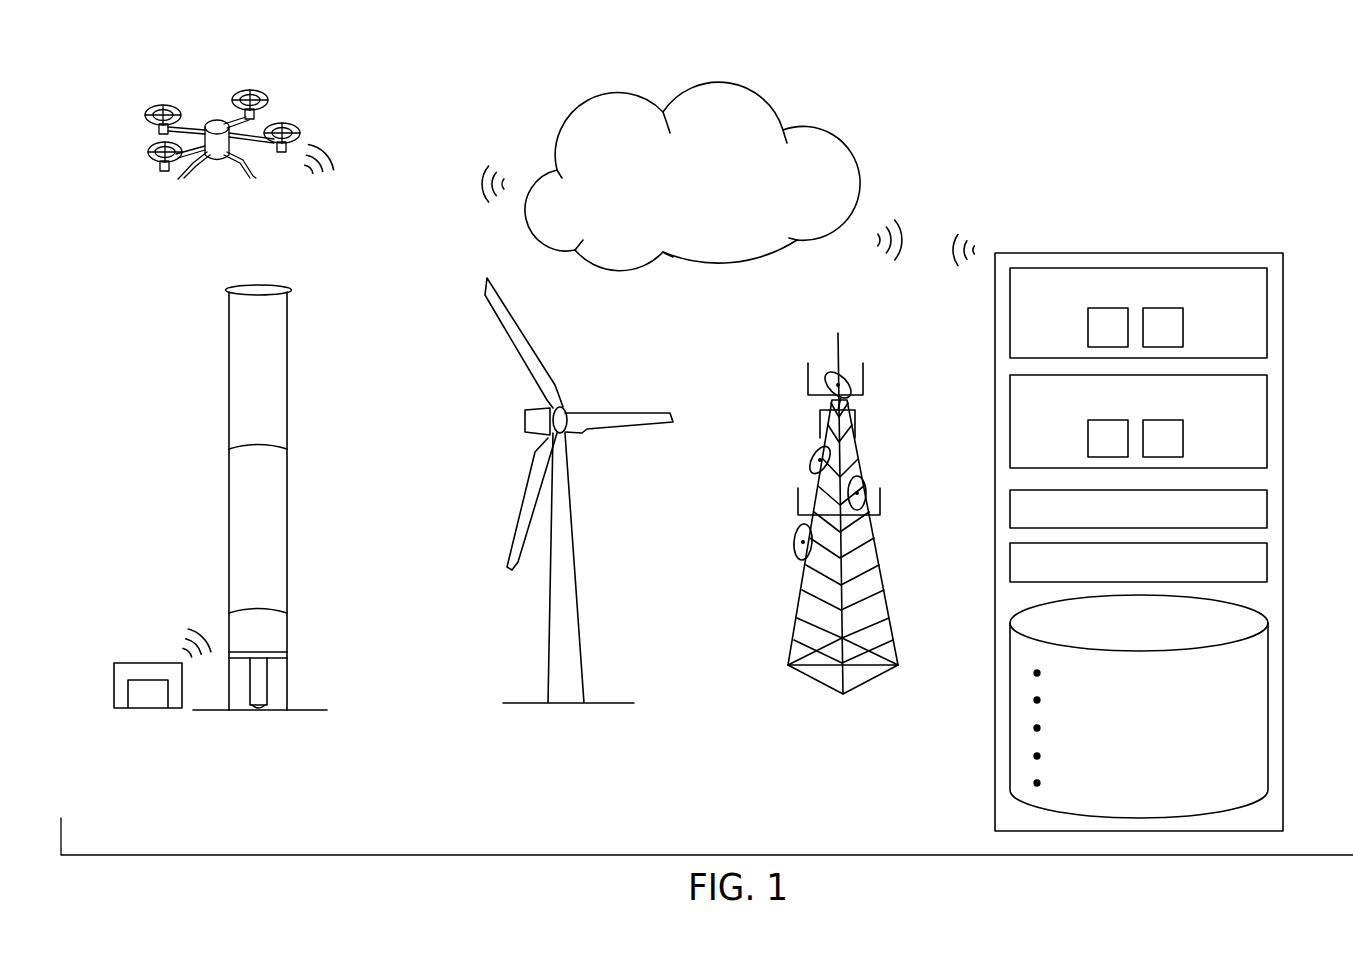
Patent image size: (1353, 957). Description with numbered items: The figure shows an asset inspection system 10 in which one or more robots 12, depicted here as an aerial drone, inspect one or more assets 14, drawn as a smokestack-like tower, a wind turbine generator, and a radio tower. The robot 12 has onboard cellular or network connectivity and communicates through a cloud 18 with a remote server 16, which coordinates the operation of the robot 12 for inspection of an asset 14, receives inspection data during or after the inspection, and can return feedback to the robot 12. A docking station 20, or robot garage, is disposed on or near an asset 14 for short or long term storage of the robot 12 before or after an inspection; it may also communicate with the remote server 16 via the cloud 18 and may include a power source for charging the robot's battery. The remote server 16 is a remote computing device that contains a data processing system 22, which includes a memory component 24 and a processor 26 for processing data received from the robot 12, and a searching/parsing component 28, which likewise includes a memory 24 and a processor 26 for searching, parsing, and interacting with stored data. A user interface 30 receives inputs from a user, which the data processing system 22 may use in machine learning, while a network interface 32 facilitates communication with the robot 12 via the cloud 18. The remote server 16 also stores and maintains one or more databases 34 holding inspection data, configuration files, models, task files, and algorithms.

The inspection system 10 is at (1080, 62).
The robot 12 is at (289, 122).
The asset 14 is at (289, 405).
The remote server 16 is at (1137, 253).
The cloud 18 is at (674, 197).
The docking station 20 is at (146, 663).
The data processing system 22 is at (1267, 313).
The memory component 24 is at (1088, 324).
The processor 26 is at (1183, 325).
The searching/parsing component 28 is at (1267, 423).
The user interface 30 is at (1267, 508).
The network interface 32 is at (1267, 563).
The database 34 is at (1267, 704).